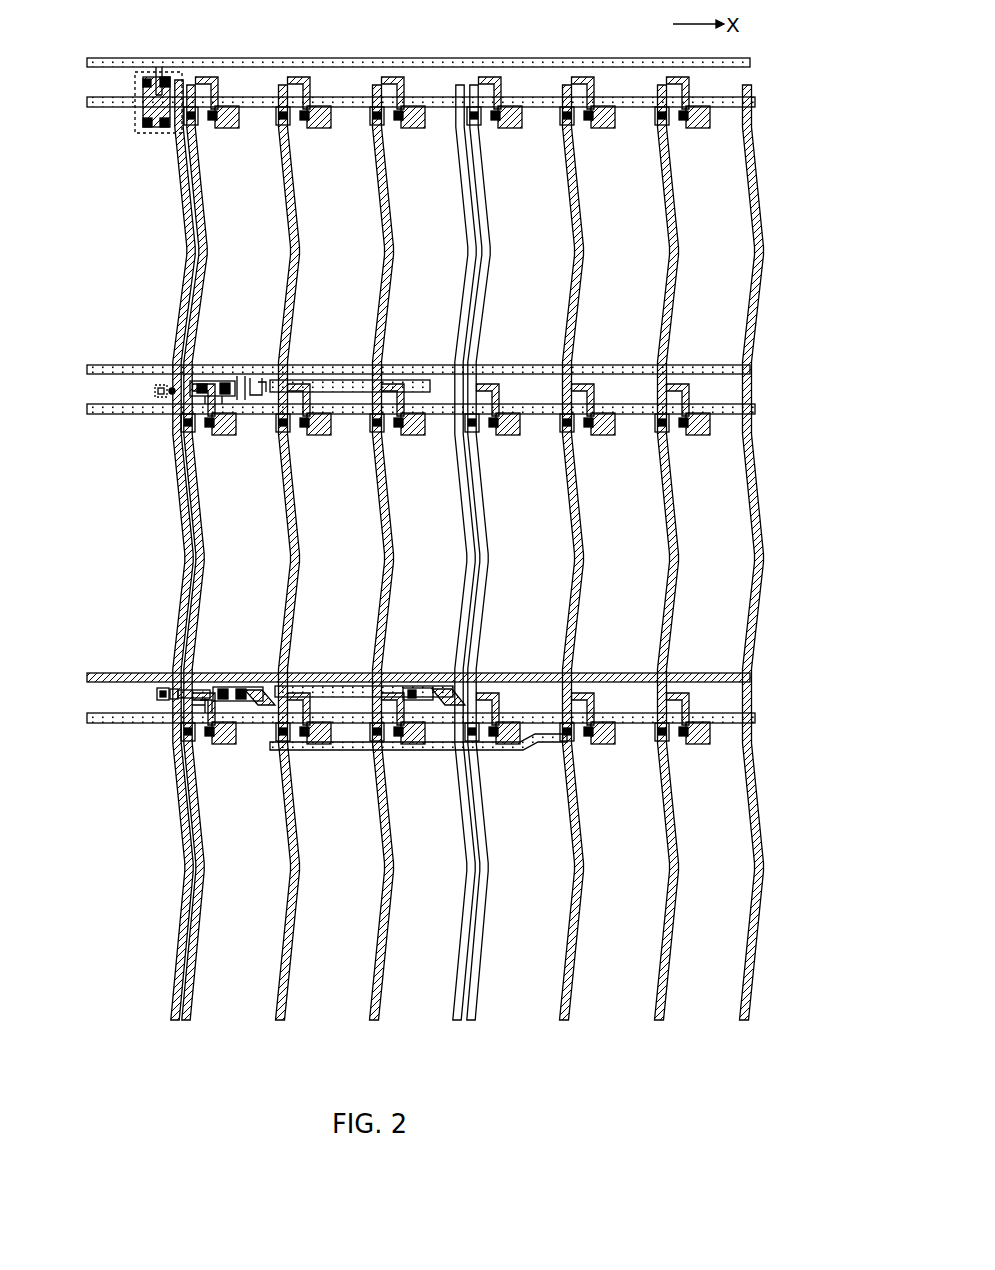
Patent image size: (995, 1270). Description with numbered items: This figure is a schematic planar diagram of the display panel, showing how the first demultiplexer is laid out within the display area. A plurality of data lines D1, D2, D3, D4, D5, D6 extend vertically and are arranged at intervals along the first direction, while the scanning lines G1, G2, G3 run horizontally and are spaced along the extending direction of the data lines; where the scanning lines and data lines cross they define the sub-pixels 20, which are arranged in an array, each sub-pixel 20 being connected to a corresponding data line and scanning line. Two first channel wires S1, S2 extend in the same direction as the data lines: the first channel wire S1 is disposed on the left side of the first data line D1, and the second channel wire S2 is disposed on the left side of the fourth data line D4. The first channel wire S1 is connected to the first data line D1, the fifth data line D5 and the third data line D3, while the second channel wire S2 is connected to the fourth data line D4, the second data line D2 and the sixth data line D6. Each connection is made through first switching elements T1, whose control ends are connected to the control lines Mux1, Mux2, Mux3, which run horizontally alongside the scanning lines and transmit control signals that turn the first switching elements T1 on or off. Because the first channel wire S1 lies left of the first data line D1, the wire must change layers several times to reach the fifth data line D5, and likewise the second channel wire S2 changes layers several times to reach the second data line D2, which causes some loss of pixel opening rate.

The first switching element T1 is at (146, 74).
The sub-pixel 20 is at (250, 130).
The first control line Mux1 is at (389, 51).
The scanning line G1 is at (391, 101).
The second control line Mux2 is at (391, 371).
The scanning line G2 is at (406, 407).
The third control line Mux3 is at (391, 680).
The scanning line G3 is at (406, 717).
The first channel wire S1 is at (161, 581).
The first data line D1 is at (215, 583).
The second data line D2 is at (284, 582).
The third data line D3 is at (378, 583).
The first channel wire S2 is at (455, 582).
The fourth data line D4 is at (483, 582).
The fifth data line D5 is at (570, 583).
The sixth data line D6 is at (663, 582).